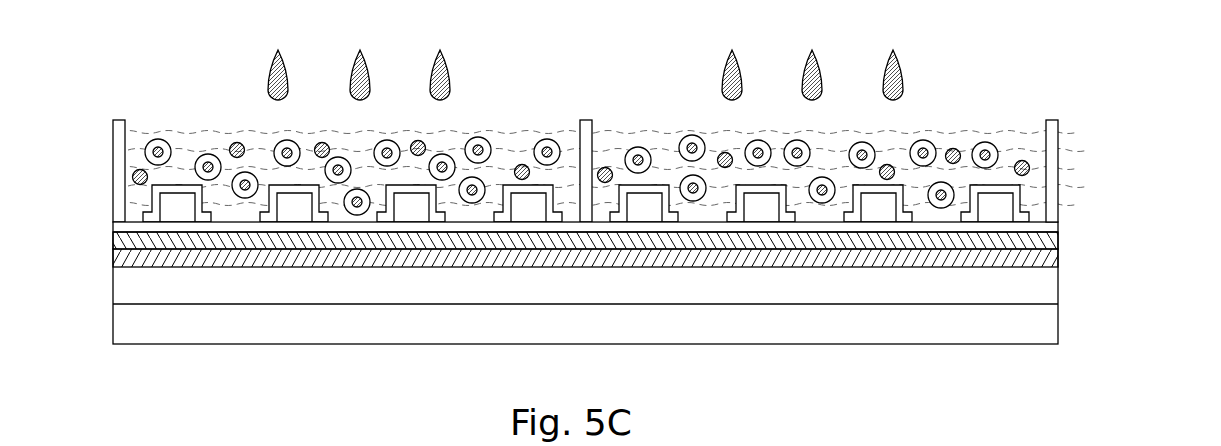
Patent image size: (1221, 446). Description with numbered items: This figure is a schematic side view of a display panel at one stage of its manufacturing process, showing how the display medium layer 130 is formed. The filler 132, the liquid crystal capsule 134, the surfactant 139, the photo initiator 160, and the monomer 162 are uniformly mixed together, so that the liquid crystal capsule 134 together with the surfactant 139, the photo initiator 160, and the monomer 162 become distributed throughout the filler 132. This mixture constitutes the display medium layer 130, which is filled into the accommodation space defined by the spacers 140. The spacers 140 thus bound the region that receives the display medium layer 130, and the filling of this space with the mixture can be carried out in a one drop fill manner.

The display medium layer 130 is at (1018, 137).
The filler 132 is at (630, 137).
The liquid crystal capsule 134 is at (976, 142).
The surfactant 139 is at (734, 70).
The spacer 140 is at (1058, 148).
The photo initiator 160 is at (814, 70).
The monomer 162 is at (895, 70).